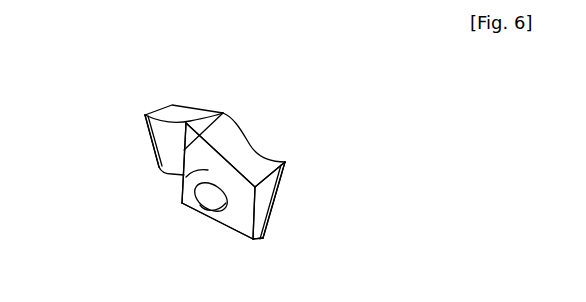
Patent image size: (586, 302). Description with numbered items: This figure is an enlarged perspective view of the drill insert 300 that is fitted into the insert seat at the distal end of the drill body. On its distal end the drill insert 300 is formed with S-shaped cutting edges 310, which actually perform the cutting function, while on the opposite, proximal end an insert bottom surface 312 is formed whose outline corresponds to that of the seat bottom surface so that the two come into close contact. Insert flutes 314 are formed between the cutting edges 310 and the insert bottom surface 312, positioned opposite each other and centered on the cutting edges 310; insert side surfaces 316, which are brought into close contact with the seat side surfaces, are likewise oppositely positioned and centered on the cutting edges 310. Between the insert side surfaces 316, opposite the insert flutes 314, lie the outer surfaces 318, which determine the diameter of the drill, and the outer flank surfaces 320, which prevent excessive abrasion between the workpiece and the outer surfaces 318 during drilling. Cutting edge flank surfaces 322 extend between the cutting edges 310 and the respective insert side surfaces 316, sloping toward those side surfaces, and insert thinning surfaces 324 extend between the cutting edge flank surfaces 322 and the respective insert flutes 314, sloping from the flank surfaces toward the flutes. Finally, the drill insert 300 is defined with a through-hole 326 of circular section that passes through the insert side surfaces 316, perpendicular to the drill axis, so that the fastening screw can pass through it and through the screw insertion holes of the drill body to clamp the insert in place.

The drill insert 300 is at (256, 117).
The S-shaped cutting edges 310 is at (175, 108).
The insert bottom surface 312 is at (238, 230).
The insert flutes 314 is at (159, 166).
The insert side surfaces 316 is at (182, 199).
The outer surfaces 318 is at (272, 208).
The outer flank surfaces 320 is at (265, 205).
The cutting edge flank surfaces 322 is at (242, 162).
The insert thinning surfaces 324 is at (147, 132).
The through-hole 326 is at (212, 200).